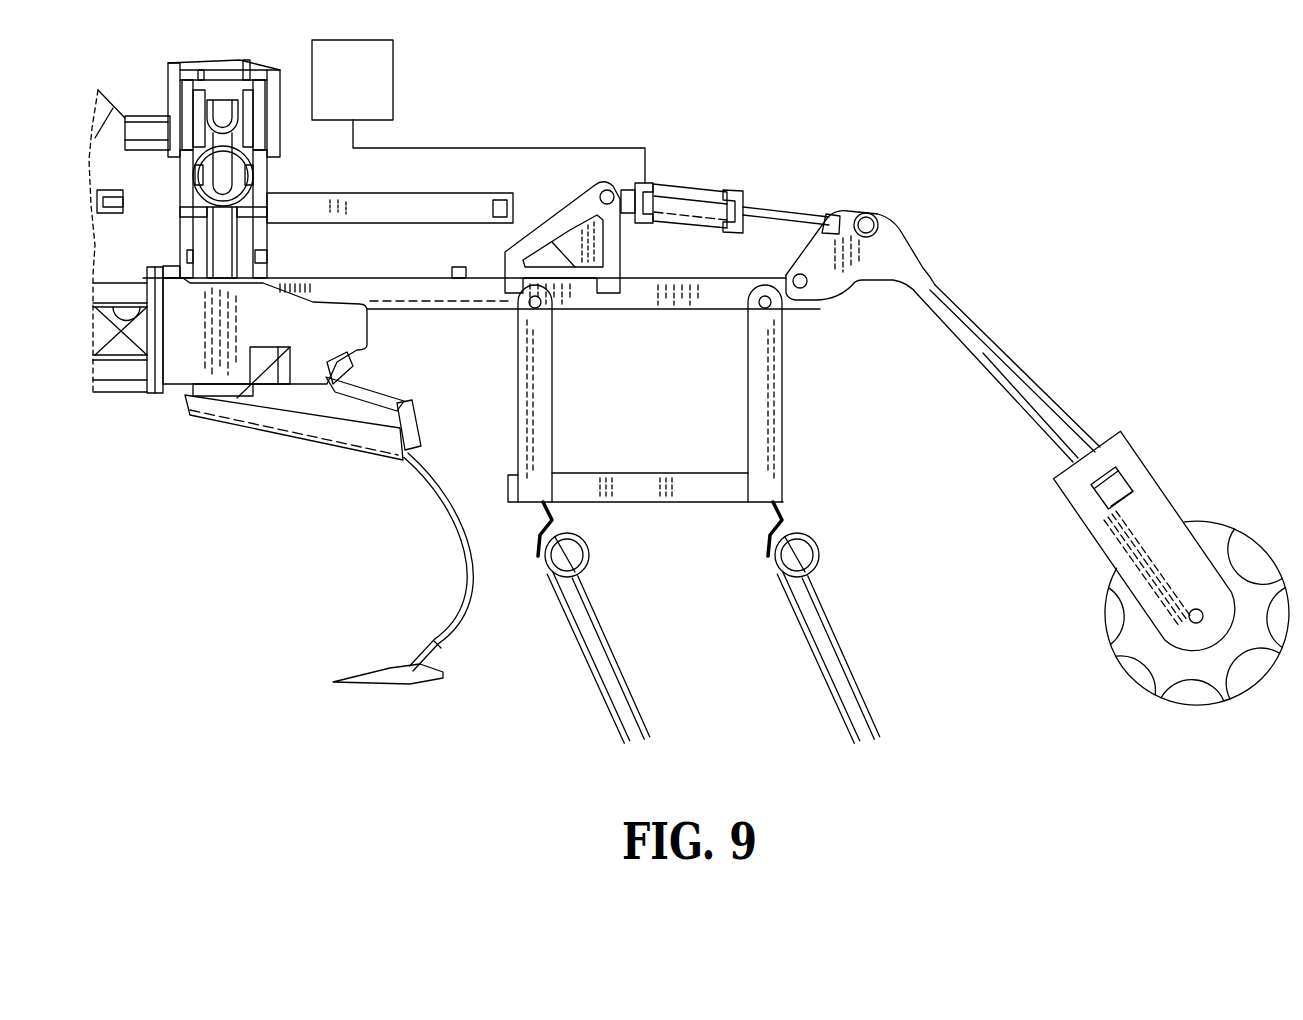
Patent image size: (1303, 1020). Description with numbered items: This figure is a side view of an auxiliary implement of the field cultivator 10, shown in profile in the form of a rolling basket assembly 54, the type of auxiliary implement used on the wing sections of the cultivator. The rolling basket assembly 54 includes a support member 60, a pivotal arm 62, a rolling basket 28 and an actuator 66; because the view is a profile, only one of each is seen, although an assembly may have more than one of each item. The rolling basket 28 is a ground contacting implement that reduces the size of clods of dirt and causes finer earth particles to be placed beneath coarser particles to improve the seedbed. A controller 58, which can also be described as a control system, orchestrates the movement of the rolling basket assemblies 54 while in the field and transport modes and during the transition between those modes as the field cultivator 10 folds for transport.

The field cultivator 10 is at (234, 692).
The rolling basket 28 is at (1247, 538).
The rolling basket assembly 54 is at (1037, 400).
The controller 58 is at (370, 91).
The support member 60 is at (633, 314).
The pivotal arm 62 is at (995, 340).
The actuator 66 is at (700, 193).